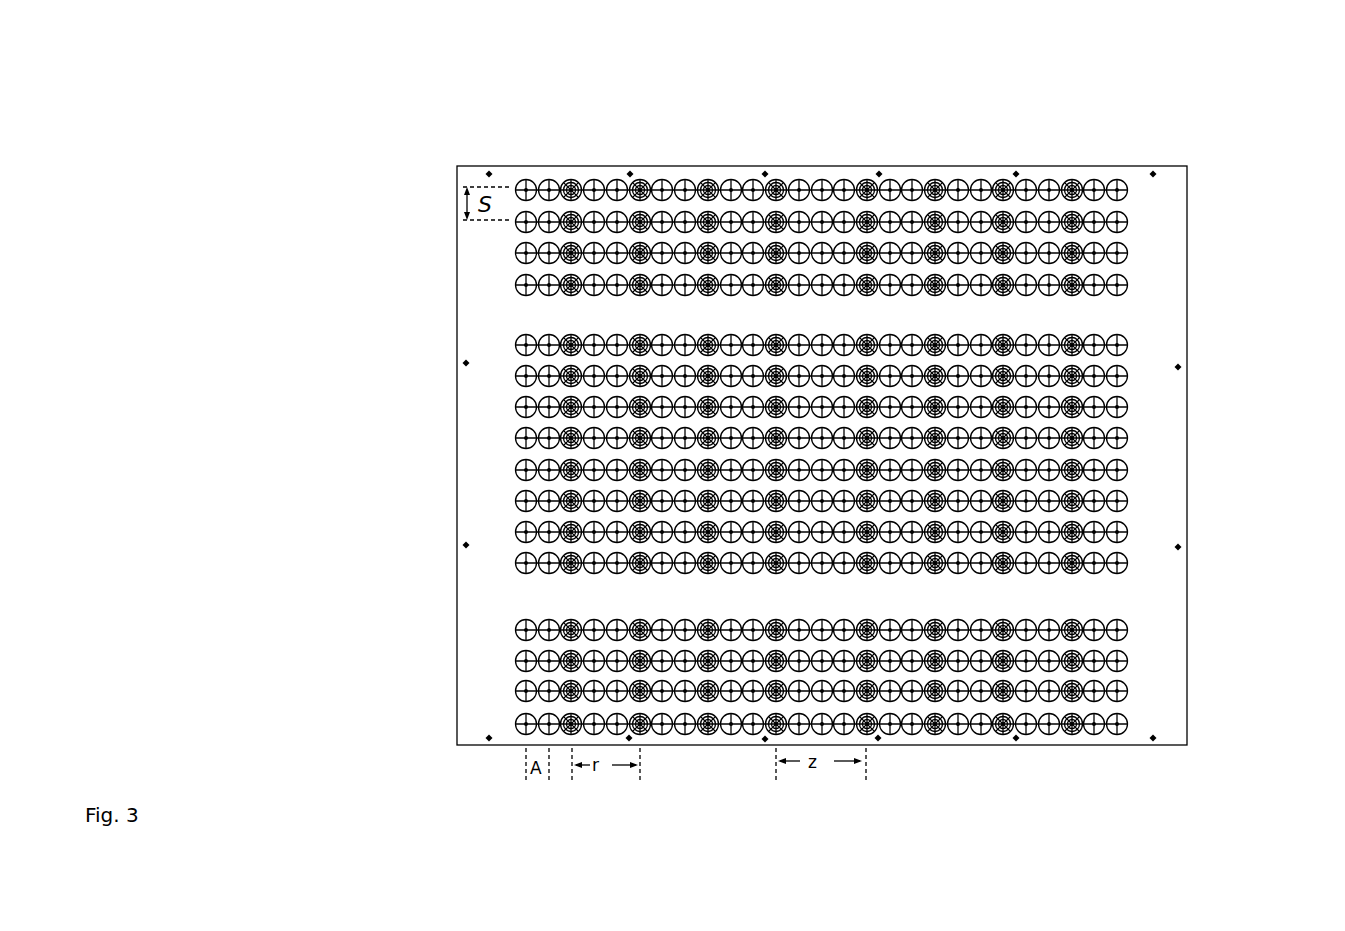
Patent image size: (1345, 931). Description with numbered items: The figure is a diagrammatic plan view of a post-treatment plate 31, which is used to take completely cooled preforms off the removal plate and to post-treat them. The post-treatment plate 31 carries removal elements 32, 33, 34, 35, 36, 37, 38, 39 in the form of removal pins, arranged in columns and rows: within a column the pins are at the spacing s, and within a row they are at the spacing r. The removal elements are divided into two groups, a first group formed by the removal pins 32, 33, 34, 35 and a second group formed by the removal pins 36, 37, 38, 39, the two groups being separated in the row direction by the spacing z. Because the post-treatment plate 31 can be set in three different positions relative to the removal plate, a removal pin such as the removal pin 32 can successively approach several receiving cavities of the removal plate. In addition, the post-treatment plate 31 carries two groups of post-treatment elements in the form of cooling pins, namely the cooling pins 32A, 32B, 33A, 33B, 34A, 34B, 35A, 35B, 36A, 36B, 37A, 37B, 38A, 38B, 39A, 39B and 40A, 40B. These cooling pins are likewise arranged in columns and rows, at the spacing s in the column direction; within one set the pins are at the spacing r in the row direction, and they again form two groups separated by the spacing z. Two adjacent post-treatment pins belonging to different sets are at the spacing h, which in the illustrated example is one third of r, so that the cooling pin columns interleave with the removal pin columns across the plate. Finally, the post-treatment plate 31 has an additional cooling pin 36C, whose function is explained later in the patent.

The post-treatment plate 31 is at (1284, 412).
The removal element 32 is at (571, 166).
The cooling pin 32A is at (523, 166).
The cooling pin 32B is at (547, 166).
The removal element 33 is at (641, 166).
The cooling pin 33A is at (595, 166).
The cooling pin 33B is at (619, 166).
The removal element 34 is at (713, 166).
The cooling pin 34A is at (662, 166).
The cooling pin 34B is at (688, 166).
The removal element 35 is at (777, 166).
The cooling pin 35A is at (733, 166).
The cooling pin 35B is at (753, 166).
The removal element 36 is at (868, 166).
The cooling pin 36A is at (820, 425).
The cooling pin 36B is at (843, 166).
The additional cooling pin 36C is at (798, 166).
The removal element 37 is at (937, 166).
The cooling pin 37A is at (892, 166).
The cooling pin 37B is at (913, 166).
The removal element 38 is at (1000, 166).
The cooling pin 38A is at (955, 166).
The cooling pin 38B is at (980, 166).
The removal element 39 is at (1071, 166).
The cooling pin 39A is at (1028, 166).
The cooling pin 39B is at (1047, 166).
The cooling pin 40A is at (1096, 166).
The cooling pin 40B is at (1119, 166).